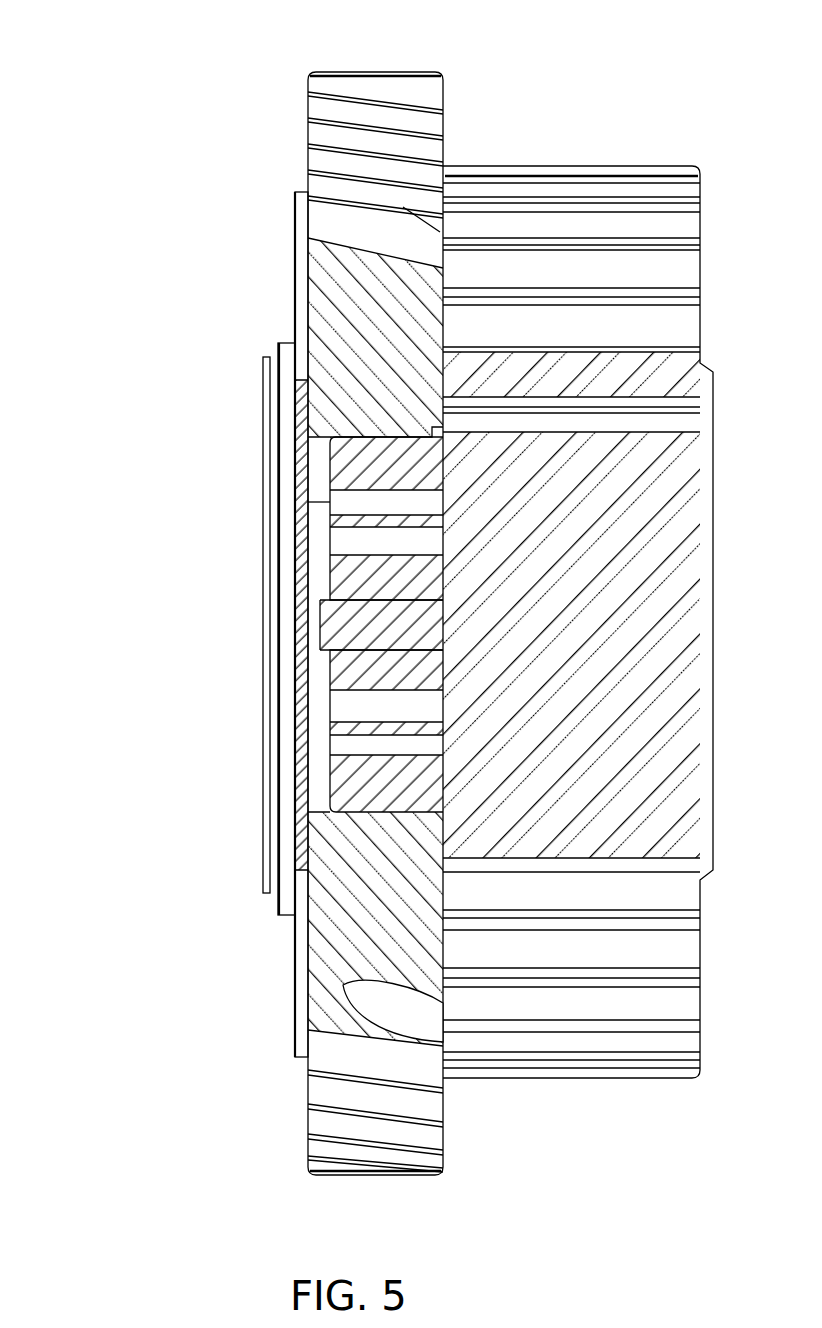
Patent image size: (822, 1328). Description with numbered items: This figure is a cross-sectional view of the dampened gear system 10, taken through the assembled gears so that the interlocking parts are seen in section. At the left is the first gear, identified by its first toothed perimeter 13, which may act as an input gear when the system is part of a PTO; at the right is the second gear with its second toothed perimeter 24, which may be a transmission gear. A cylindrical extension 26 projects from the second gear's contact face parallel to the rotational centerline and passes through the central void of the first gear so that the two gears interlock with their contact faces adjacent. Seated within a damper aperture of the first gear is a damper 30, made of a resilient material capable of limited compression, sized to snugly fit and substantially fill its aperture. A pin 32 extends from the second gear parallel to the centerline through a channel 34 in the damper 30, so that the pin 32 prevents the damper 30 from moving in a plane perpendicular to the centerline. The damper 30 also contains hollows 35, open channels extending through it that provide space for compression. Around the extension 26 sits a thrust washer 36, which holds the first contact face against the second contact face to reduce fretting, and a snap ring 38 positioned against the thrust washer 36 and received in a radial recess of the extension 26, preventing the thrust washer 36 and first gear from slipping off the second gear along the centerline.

The dampened gear system 10 is at (672, 115).
The first toothed perimeter 13 is at (316, 72).
The second toothed perimeter 24 is at (498, 166).
The cylindrical extension 26 is at (268, 878).
The damper 30 is at (331, 678).
The pin 32 is at (338, 624).
The channel 34 is at (345, 570).
The hollows 35 is at (331, 708).
The thrust washer 36 is at (297, 252).
The snap ring 38 is at (280, 353).